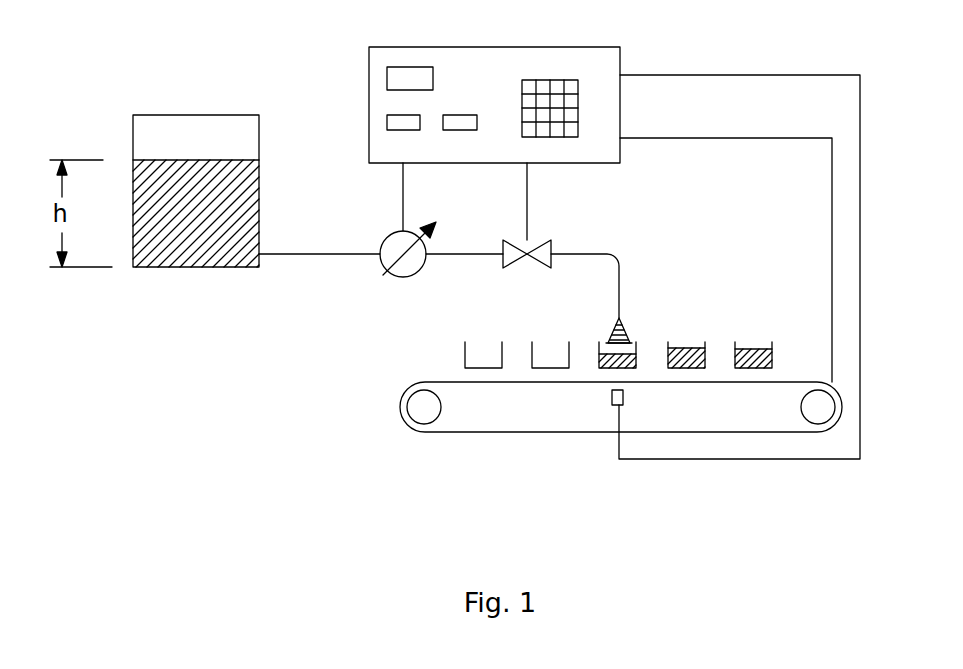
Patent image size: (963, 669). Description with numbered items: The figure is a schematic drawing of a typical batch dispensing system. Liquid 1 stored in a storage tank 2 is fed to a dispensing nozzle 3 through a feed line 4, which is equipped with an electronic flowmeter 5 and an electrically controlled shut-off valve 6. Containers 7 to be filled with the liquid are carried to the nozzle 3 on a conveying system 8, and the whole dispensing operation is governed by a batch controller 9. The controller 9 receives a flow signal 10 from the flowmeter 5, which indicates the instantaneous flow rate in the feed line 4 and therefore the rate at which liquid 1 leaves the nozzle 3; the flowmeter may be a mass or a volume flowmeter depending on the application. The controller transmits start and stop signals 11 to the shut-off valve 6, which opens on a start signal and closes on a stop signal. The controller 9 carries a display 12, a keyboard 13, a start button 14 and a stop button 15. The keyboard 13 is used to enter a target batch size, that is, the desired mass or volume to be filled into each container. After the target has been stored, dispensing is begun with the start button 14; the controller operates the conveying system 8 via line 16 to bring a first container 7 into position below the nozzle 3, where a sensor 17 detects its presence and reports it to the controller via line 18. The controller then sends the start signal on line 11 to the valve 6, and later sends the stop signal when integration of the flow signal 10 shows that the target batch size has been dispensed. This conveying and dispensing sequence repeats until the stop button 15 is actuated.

The liquid 1 is at (190, 246).
The storage tank 2 is at (133, 190).
The dispensing nozzle 3 is at (621, 273).
The feed line 4 is at (320, 256).
The electronic flowmeter 5 is at (412, 262).
The shut-off valve 6 is at (545, 258).
The containers 7 is at (463, 350).
The conveying system 8 is at (457, 432).
The batch controller 9 is at (600, 165).
The flow signal 10 is at (402, 192).
The start and stop signals 11 is at (526, 192).
The display 12 is at (400, 82).
The keyboard 13 is at (545, 100).
The start button 14 is at (393, 122).
The stop button 15 is at (455, 118).
The line 16 is at (778, 137).
The sensor 17 is at (625, 398).
The line 18 is at (778, 74).